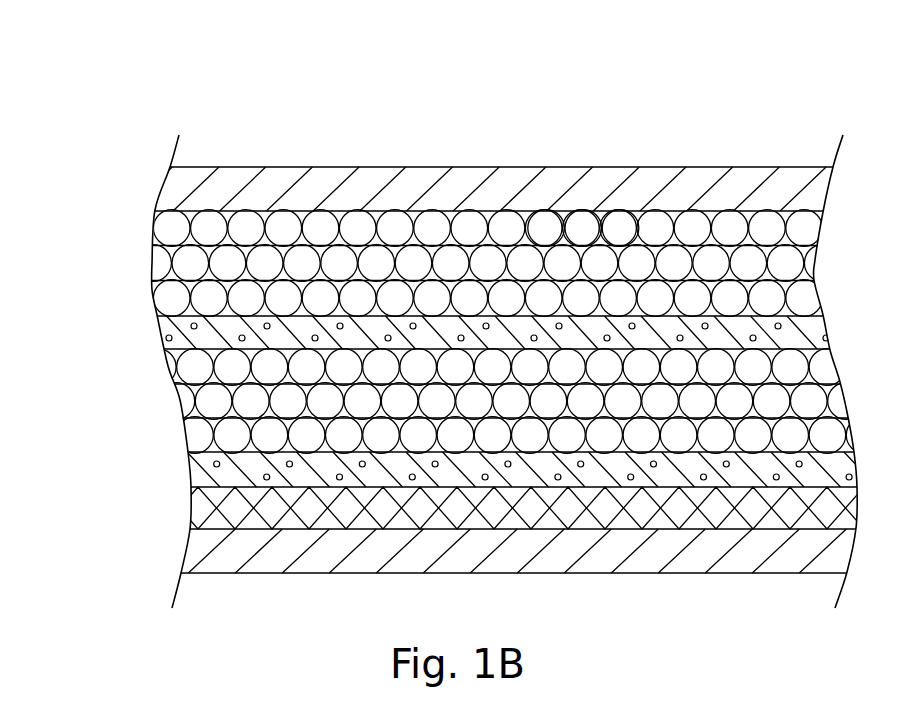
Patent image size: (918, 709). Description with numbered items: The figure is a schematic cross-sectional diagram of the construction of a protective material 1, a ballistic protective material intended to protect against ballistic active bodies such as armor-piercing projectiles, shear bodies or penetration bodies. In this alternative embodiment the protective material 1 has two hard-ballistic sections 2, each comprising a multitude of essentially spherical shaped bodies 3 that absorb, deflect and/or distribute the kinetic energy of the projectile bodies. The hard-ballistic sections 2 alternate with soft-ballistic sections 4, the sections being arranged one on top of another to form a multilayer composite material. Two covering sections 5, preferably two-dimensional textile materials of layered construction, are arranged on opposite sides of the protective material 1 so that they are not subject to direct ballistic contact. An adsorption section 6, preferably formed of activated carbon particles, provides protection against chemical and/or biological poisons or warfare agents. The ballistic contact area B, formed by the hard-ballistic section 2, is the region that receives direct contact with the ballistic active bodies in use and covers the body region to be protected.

The protective material 1 is at (108, 106).
The hard-ballistic section 2 is at (133, 211).
The spherical shaped bodies 3 is at (619, 230).
The soft-ballistic section 4 is at (133, 316).
The covering section 5 is at (133, 167).
The adsorption section 6 is at (133, 487).
The ballistic contact area B is at (182, 88).